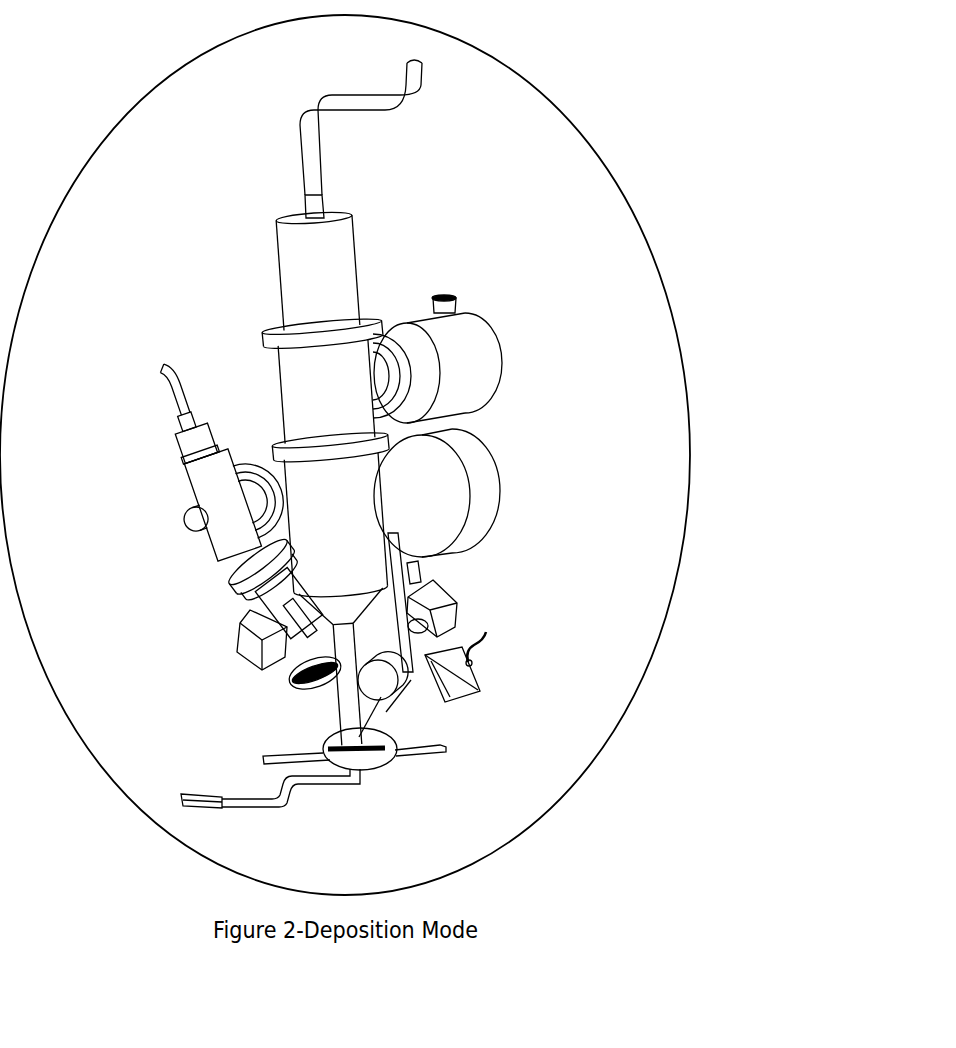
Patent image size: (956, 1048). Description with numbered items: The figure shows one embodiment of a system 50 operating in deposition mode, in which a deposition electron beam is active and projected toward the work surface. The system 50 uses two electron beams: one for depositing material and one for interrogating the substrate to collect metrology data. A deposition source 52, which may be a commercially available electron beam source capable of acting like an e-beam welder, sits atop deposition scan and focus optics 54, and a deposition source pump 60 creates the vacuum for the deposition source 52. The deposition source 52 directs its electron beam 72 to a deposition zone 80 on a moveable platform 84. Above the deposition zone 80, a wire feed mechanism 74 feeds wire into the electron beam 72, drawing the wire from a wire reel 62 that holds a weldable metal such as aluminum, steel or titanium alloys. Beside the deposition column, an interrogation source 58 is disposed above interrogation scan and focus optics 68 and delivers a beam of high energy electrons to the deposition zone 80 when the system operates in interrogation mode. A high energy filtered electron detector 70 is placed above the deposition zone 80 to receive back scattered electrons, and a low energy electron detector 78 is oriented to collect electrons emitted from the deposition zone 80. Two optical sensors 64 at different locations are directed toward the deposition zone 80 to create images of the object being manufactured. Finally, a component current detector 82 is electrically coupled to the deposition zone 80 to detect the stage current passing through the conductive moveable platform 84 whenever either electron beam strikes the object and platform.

The system 50 is at (536, 64).
The deposition source 52 is at (294, 267).
The deposition scan and focus optics 54 is at (321, 486).
The interrogation source 58 is at (201, 482).
The deposition source pump 60 is at (506, 321).
The wire reel 62 is at (487, 479).
The optical sensors 64 is at (280, 636).
The interrogation scan and focus optics 68 is at (252, 580).
The high energy filtered electron detector 70 is at (287, 678).
The electron beam 72 is at (336, 710).
The wire feed mechanism 74 is at (389, 677).
The low energy electron detector 78 is at (488, 699).
The deposition zone 80 is at (377, 791).
The component current detector 82 is at (215, 808).
The moveable platform 84 is at (448, 764).